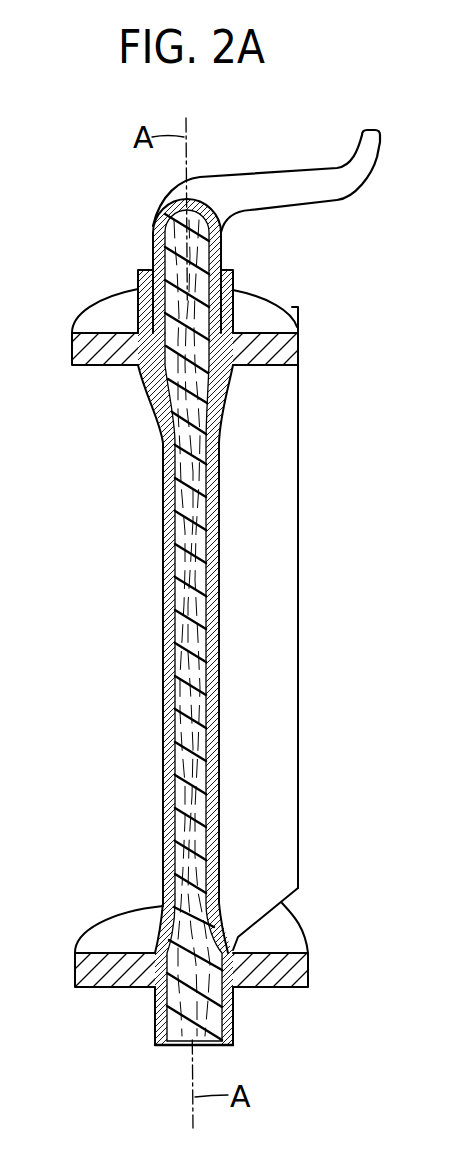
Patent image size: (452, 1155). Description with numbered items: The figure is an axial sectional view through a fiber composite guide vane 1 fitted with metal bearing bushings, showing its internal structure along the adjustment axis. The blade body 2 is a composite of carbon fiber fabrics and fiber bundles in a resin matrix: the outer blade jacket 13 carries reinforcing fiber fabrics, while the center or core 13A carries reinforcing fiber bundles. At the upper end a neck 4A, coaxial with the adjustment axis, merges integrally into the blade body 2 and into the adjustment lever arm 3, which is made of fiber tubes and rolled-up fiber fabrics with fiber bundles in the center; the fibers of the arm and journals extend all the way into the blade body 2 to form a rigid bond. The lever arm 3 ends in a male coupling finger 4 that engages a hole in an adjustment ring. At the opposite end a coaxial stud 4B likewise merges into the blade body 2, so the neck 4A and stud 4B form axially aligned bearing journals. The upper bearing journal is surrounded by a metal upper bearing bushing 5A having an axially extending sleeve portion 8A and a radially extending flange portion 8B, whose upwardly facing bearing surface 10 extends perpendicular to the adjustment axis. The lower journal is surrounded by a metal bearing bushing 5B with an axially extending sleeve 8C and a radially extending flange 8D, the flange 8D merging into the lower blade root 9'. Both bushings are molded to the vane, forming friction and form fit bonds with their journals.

The guide vane 1 is at (317, 647).
The blade body 2 is at (277, 795).
The adjustment lever arm 3 is at (260, 181).
The male coupling member or finger 4 is at (374, 150).
The neck 4A is at (167, 270).
The stud 4B is at (183, 1045).
The upper bearing bushing 5A is at (247, 286).
The lower bearing bushing 5B is at (84, 916).
The axially extending sleeve portion 8A is at (125, 300).
The radially extending flange portion 8B is at (282, 348).
The axially extending sleeve 8C is at (225, 1015).
The radially extending flange 8D is at (287, 970).
The blade root 9' is at (303, 919).
The bearing surface 10 is at (268, 313).
The blade jacket 13 is at (170, 840).
The core 13A is at (193, 613).